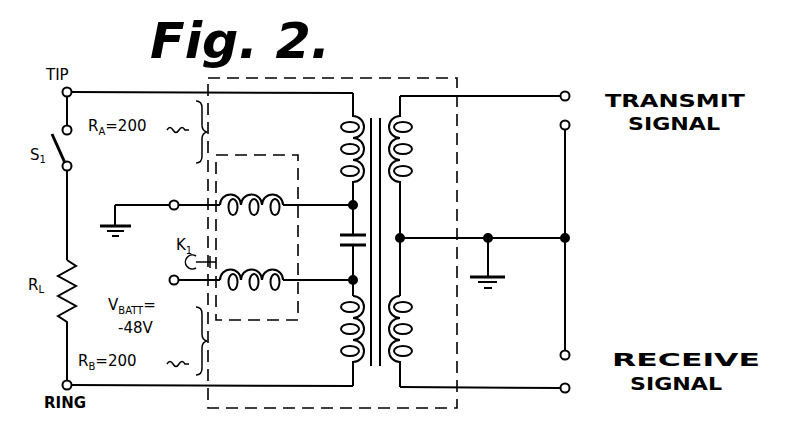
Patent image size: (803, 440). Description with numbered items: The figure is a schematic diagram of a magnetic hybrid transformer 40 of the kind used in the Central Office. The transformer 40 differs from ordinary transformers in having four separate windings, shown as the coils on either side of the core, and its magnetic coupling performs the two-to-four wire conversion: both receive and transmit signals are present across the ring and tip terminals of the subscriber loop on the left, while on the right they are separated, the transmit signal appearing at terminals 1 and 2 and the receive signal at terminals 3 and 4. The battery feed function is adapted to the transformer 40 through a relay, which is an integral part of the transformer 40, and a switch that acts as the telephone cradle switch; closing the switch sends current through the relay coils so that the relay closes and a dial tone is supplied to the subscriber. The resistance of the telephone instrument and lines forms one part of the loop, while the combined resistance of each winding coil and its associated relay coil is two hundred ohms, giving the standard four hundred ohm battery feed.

The magnetic hybrid transformer 40 is at (386, 77).
The transmit signal terminal 1 is at (491, 93).
The transmit signal terminal 2 is at (573, 180).
The receive signal terminal 3 is at (573, 299).
The receive signal terminal 4 is at (491, 397).